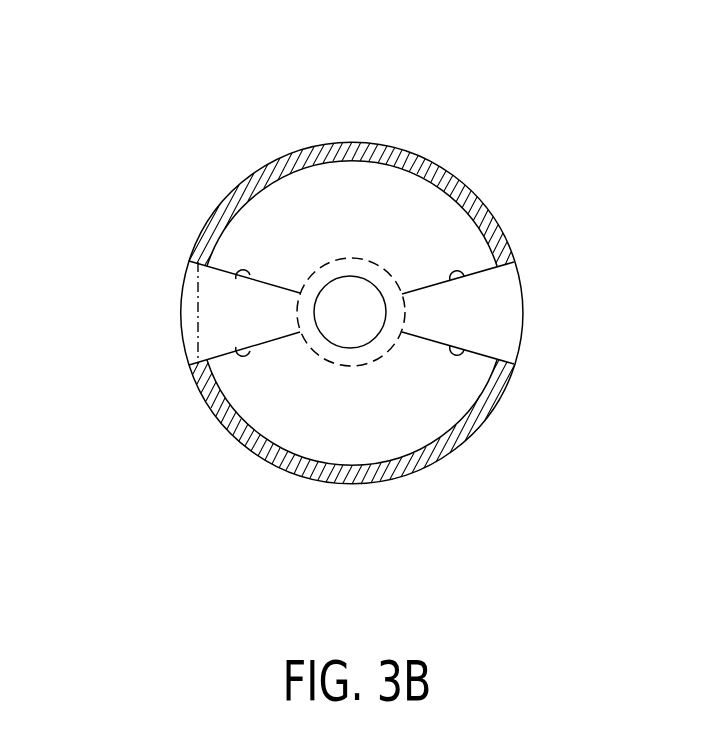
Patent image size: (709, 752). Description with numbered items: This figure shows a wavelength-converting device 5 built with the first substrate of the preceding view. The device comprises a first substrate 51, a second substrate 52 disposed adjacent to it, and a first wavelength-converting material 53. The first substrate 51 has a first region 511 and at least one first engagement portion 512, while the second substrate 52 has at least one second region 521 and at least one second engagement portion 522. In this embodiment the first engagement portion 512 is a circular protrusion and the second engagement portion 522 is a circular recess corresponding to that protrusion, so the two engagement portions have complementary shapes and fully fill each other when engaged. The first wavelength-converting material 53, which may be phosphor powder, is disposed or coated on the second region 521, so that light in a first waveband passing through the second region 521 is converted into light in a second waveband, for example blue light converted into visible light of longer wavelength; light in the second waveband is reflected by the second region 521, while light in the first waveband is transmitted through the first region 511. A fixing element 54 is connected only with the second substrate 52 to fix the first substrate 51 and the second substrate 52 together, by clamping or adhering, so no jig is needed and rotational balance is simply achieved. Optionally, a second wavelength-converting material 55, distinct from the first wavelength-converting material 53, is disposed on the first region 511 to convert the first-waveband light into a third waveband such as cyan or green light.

The wavelength-converting device 5 is at (610, 92).
The first substrate 51 is at (347, 308).
The first region 511 is at (615, 327).
The first engagement portion 512 is at (247, 355).
The second substrate 52 is at (317, 193).
The second region 521 is at (348, 129).
The second engagement portion 522 is at (450, 251).
The first wavelength-converting material 53 is at (252, 185).
The fixing element 54 is at (316, 268).
The second wavelength-converting material 55 is at (192, 278).